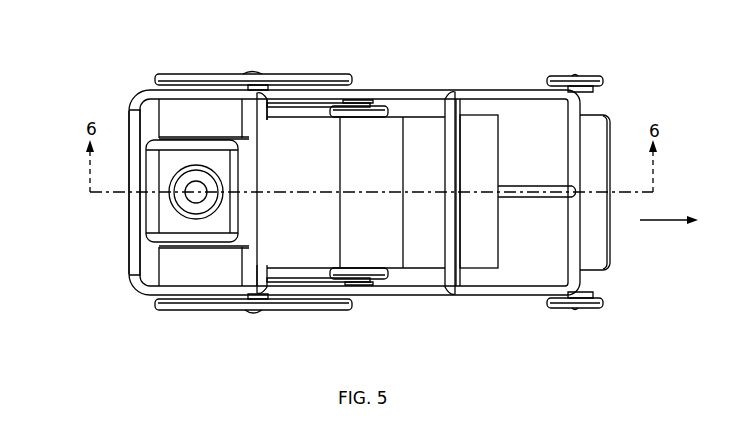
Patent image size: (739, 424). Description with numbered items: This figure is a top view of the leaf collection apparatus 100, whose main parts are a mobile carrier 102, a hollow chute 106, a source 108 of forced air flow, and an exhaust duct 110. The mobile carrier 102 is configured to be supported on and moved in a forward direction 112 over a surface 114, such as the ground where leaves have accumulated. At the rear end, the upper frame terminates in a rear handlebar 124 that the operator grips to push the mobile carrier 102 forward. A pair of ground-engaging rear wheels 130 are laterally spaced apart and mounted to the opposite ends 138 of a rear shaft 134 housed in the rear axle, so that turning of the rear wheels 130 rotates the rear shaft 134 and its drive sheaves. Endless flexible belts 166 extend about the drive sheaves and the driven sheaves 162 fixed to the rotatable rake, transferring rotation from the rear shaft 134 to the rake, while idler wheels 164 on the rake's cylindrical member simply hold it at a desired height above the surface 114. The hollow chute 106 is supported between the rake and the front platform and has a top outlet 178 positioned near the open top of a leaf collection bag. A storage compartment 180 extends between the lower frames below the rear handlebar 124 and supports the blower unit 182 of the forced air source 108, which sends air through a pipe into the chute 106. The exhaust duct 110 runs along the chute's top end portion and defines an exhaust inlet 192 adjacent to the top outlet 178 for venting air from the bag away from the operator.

The apparatus 100 is at (552, 6).
The mobile carrier 102 is at (428, 84).
The hollow chute 106 is at (502, 108).
The source of forced air flow 108 is at (138, 198).
The exhaust duct 110 is at (448, 134).
The forward direction 112 is at (650, 221).
The surface 114 is at (549, 242).
The rear handlebar 124 is at (127, 143).
The rear wheels 130 is at (190, 73).
The rear shaft 134 is at (268, 84).
The opposite ends of the rear shaft 138 is at (248, 70).
The driven sheaves 162 is at (360, 278).
The idler wheels 164 is at (378, 106).
The endless flexible belts 166 is at (316, 103).
The top outlet 178 is at (500, 168).
The storage compartment 180 is at (160, 272).
The blower unit 182 is at (146, 225).
The exhaust inlet 192 is at (465, 242).